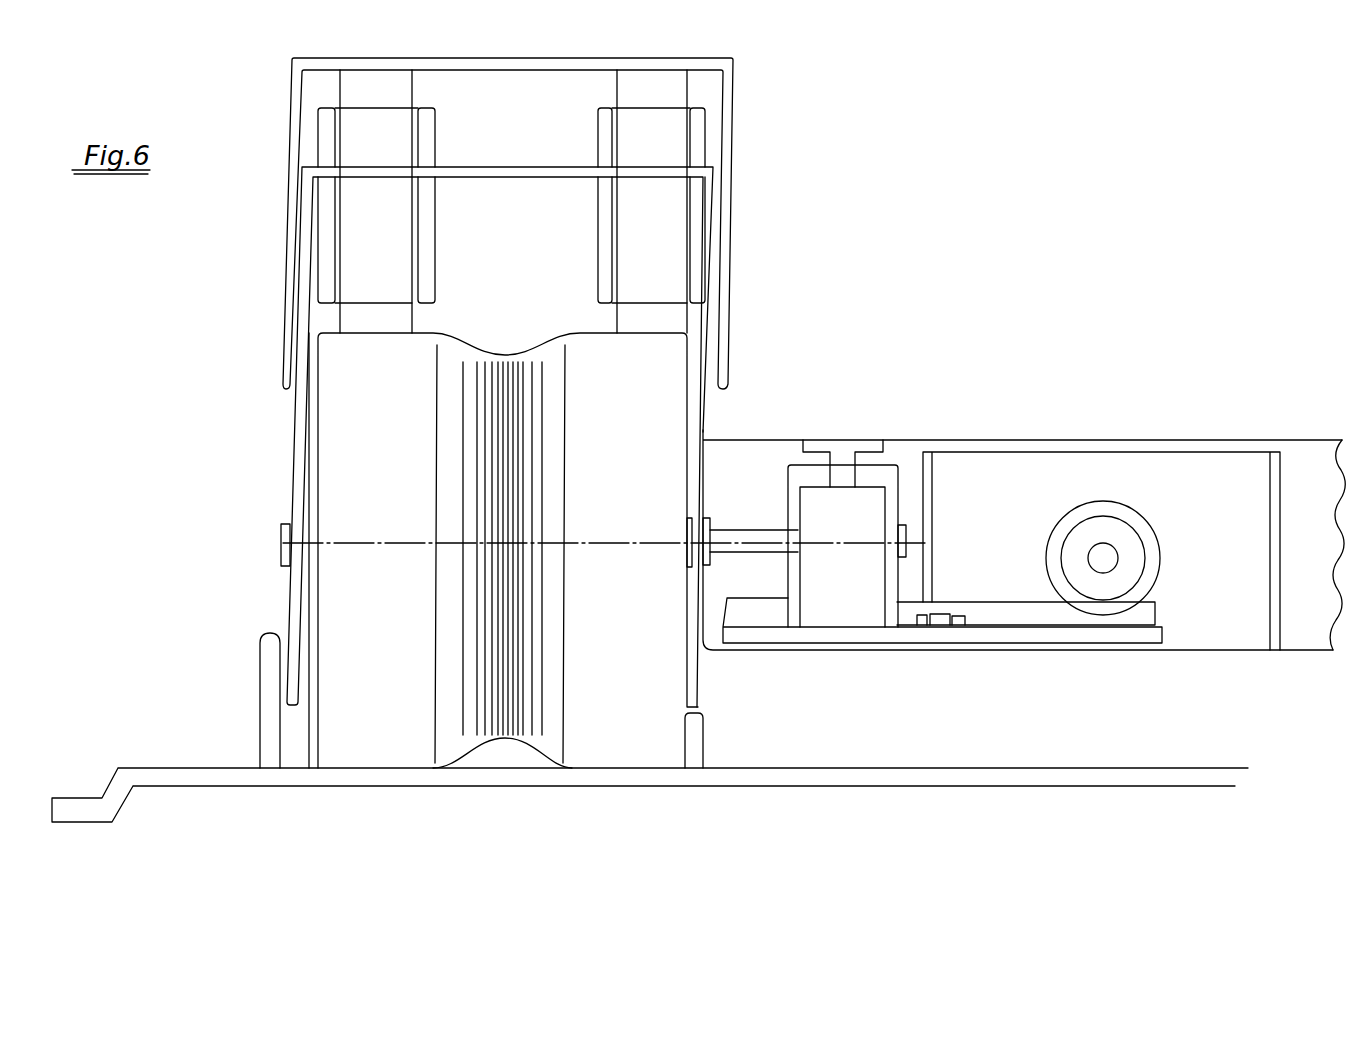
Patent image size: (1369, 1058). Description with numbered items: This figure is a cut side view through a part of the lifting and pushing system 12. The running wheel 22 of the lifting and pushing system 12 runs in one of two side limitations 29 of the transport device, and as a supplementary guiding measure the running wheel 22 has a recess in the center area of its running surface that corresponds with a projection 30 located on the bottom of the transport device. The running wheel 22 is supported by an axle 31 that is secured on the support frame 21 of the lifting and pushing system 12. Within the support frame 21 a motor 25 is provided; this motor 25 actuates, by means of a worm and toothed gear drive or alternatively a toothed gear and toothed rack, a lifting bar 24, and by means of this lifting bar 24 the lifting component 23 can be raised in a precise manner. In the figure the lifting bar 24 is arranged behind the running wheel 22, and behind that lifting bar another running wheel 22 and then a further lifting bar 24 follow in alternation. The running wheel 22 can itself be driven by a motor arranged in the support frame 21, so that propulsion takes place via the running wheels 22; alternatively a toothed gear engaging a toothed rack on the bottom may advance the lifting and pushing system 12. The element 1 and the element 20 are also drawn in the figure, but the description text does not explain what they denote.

The base plate 1 is at (738, 792).
The lifting and pushing system 12 is at (923, 282).
The motor 20 is at (870, 487).
The support frame 21 is at (1168, 445).
The running wheel 22 is at (372, 463).
The lifting component 23 is at (727, 98).
The lifting bar 24 is at (358, 315).
The motor 25 is at (1007, 498).
The side limitation 29 is at (693, 737).
The projection 30 is at (505, 757).
The axle 31 is at (283, 544).